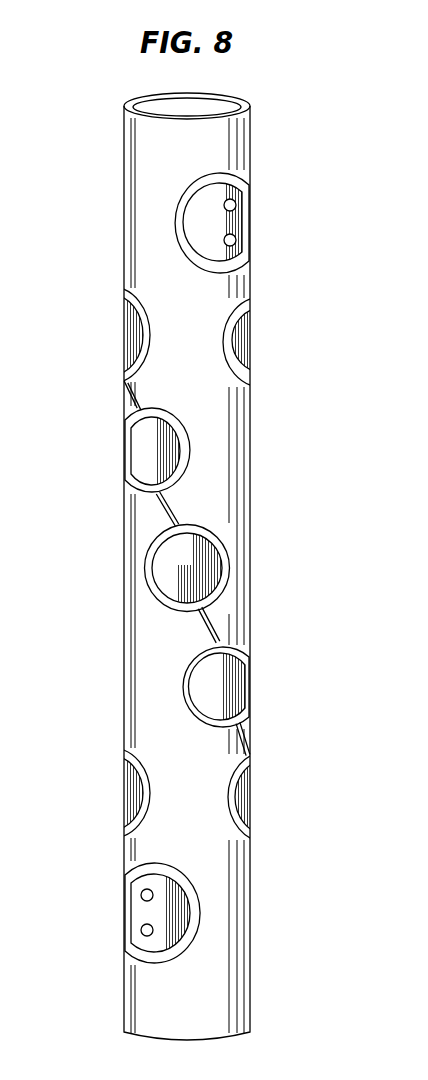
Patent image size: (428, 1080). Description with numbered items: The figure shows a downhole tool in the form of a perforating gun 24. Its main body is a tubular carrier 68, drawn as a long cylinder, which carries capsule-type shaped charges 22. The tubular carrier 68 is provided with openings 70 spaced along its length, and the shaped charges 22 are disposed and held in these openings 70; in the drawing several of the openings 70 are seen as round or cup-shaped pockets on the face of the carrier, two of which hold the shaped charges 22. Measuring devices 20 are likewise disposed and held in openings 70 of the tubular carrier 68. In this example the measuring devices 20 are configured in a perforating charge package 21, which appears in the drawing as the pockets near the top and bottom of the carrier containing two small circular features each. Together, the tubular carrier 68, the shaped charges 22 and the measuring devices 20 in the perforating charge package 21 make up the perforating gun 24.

The measuring device 20 is at (226, 222).
The perforating charge package 21 is at (140, 914).
The shaped charge 22 is at (213, 563).
The perforating gun 24 is at (100, 169).
The tubular carrier 68 is at (148, 645).
The opening 70 is at (228, 322).